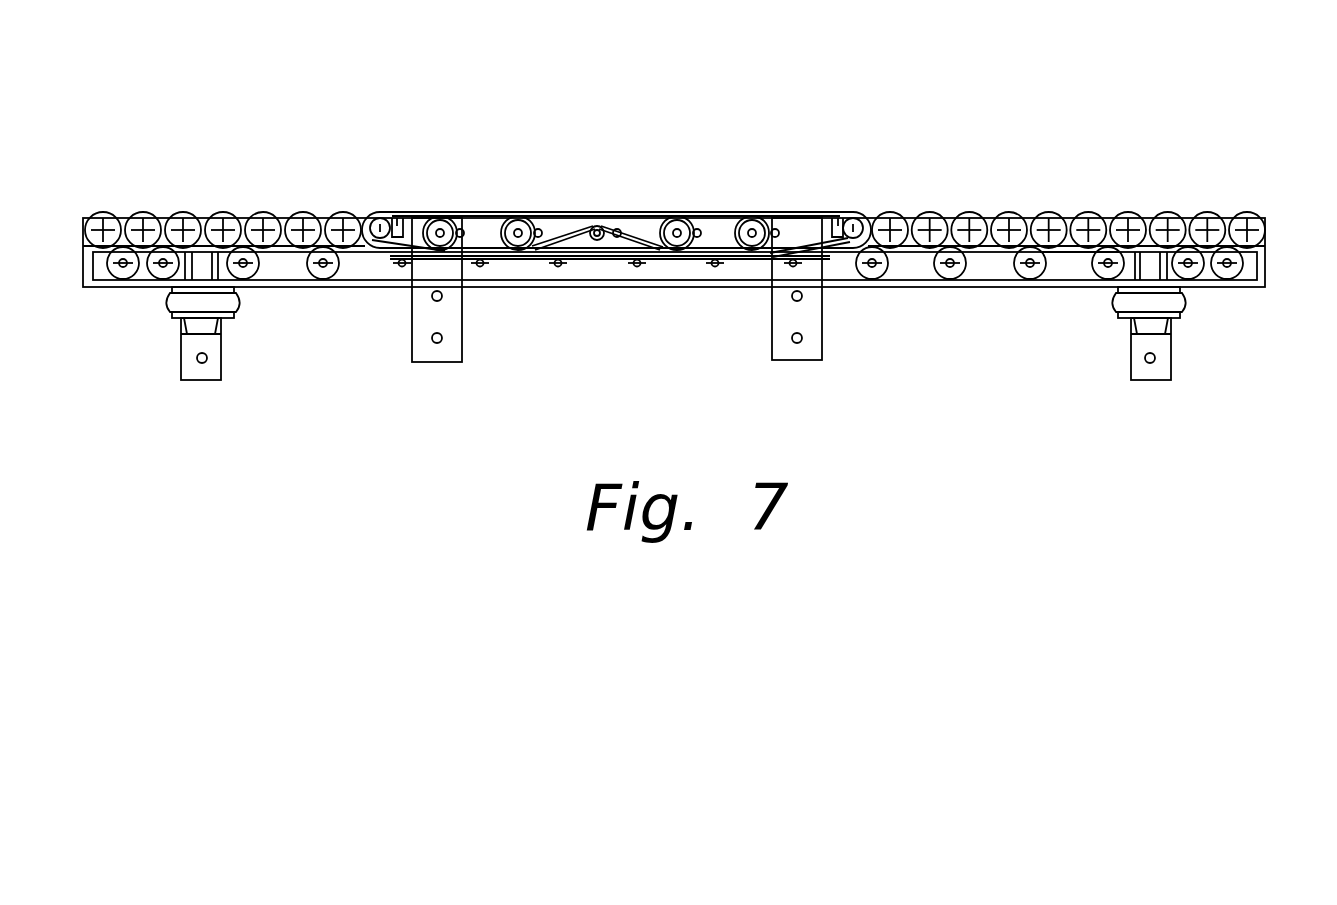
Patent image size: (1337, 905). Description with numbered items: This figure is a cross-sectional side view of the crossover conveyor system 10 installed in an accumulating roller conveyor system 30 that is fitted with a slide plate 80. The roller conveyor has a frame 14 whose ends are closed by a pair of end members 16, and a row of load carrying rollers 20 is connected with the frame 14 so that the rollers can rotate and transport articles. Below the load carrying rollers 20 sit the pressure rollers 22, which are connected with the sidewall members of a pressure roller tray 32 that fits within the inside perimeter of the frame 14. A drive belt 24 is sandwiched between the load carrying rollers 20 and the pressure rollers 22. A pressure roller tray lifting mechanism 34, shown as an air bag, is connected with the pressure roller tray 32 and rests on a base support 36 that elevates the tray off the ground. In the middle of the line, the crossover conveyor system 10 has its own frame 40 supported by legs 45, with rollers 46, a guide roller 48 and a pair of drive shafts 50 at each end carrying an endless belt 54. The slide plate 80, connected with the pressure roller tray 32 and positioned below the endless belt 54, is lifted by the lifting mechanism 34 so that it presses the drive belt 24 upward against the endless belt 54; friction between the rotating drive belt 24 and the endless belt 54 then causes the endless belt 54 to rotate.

The crossover conveyor system 10 is at (643, 146).
The frame 14 is at (285, 215).
The end members 16 is at (82, 250).
The load carrying rollers 20 is at (181, 212).
The pressure rollers 22 is at (963, 270).
The drive belt 24 is at (1063, 253).
The accumulating roller conveyor system 30 is at (226, 186).
The pressure roller tray 32 is at (1260, 268).
The pressure roller tray lifting mechanism 34 is at (238, 303).
The base support 36 is at (222, 348).
The frame 40 is at (404, 217).
The legs 45 is at (462, 315).
The rollers 46 is at (510, 216).
The guide roller 48 is at (592, 224).
The drive shafts 50 is at (376, 216).
The endless belt 54 is at (720, 212).
The slide plate 80 is at (597, 260).